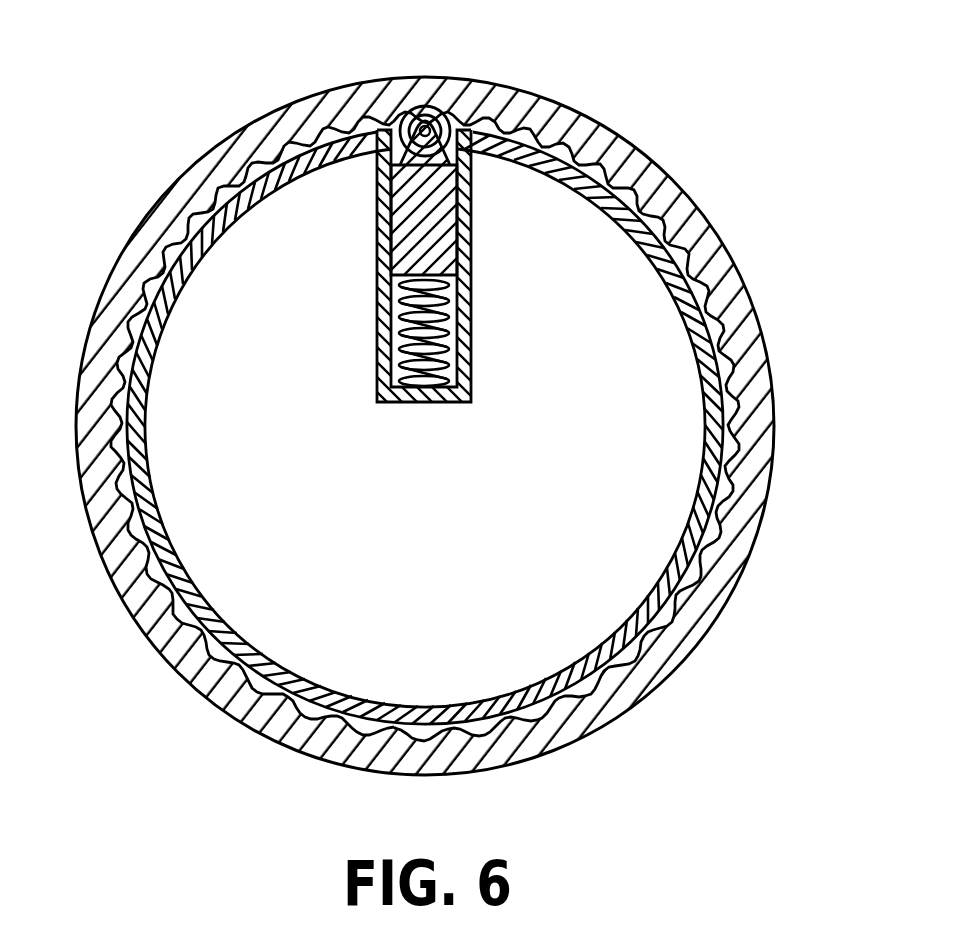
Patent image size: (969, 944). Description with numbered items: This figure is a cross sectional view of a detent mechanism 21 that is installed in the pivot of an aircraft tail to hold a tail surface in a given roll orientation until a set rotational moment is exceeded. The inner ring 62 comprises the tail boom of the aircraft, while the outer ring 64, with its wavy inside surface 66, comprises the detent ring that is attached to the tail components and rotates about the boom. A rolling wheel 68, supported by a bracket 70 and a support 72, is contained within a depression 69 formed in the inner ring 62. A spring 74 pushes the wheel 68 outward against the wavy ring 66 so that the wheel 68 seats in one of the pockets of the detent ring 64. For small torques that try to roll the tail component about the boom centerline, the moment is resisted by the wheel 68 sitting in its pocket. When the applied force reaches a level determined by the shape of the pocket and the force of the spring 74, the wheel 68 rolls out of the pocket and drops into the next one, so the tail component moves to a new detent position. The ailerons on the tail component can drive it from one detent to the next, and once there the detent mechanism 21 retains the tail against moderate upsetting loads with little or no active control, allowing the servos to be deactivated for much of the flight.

The detent mechanism 21 is at (660, 80).
The inner ring 62 is at (695, 353).
The outer ring 64 is at (757, 340).
The wavy inside surface 66 is at (740, 445).
The rolling wheel 68 is at (443, 117).
The depression 69 is at (488, 355).
The bracket 70 is at (472, 140).
The support 72 is at (413, 215).
The spring 74 is at (413, 325).